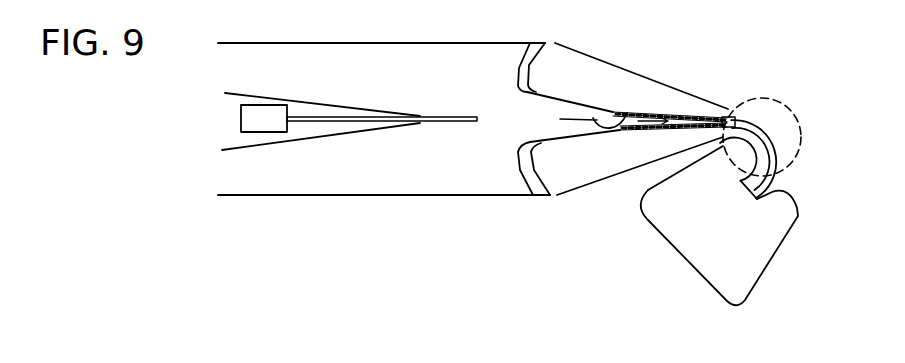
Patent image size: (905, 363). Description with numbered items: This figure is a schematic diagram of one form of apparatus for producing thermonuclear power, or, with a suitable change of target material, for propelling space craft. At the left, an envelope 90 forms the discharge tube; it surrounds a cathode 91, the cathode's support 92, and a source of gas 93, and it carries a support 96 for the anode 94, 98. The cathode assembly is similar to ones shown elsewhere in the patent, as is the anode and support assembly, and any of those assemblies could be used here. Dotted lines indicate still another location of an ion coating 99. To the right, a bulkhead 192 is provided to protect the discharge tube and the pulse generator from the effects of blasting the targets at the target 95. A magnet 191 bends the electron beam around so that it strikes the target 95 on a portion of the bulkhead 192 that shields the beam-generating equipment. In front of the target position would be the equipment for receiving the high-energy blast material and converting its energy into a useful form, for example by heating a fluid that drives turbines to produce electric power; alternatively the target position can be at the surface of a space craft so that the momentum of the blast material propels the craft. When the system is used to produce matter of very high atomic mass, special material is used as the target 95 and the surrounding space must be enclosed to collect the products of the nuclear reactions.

The envelope 90 is at (478, 44).
The cathode 91 is at (455, 118).
The cathode support 92 is at (347, 107).
The source of gas 93 is at (262, 118).
The anode 94 is at (583, 133).
The target 95 is at (768, 145).
The support 96 is at (533, 178).
The anode 98 is at (662, 84).
The ion coating 99 is at (593, 118).
The magnet 191 is at (733, 117).
The bulkhead 192 is at (670, 218).